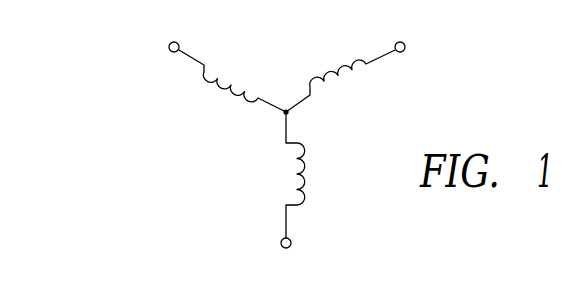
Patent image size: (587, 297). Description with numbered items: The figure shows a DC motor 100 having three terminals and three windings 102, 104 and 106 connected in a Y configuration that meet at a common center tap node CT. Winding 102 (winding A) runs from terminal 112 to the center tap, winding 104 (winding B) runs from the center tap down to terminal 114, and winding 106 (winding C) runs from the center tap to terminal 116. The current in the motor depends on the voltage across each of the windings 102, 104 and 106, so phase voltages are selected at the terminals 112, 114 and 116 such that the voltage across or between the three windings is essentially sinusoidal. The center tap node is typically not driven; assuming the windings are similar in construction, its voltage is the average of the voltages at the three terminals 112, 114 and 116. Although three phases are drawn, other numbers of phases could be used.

The DC motor 100 is at (94, 182).
The winding 102 is at (207, 84).
The winding 104 is at (303, 199).
The winding 106 is at (355, 56).
The terminal 112 is at (169, 46).
The terminal 114 is at (281, 246).
The terminal 116 is at (405, 46).